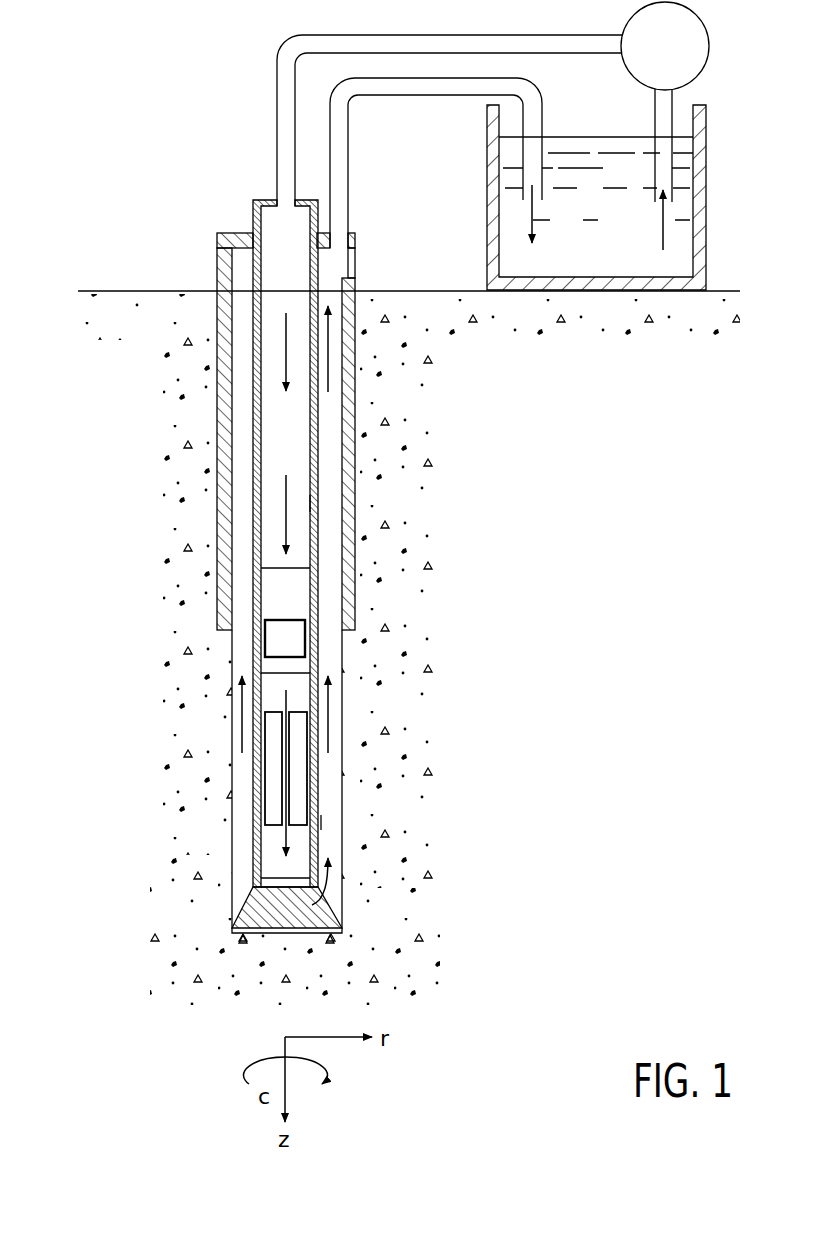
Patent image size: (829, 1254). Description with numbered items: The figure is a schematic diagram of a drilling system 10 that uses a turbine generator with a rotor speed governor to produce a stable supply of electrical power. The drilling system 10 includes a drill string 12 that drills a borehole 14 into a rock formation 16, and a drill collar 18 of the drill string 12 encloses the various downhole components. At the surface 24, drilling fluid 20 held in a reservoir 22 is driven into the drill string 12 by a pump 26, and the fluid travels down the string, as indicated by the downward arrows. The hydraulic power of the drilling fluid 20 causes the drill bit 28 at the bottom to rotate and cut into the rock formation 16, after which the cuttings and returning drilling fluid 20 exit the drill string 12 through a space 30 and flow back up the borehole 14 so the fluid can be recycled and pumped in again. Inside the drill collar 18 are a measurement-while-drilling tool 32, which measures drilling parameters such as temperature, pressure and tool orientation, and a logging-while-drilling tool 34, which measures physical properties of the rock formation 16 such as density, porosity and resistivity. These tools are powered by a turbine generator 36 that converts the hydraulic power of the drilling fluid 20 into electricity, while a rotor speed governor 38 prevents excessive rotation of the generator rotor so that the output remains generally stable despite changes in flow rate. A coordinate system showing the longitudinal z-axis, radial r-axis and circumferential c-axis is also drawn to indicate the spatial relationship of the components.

The drilling system 10 is at (113, 96).
The drill string 12 is at (249, 209).
The borehole 14 is at (375, 267).
The rock formation 16 is at (471, 453).
The drill collar 18 is at (316, 503).
The drilling fluid 20 is at (290, 418).
The reservoir 22 is at (493, 198).
The surface 24 is at (755, 238).
The pump 26 is at (688, 42).
The drill bit 28 is at (255, 918).
The space 30 is at (336, 822).
The measurement-while-drilling (MWD) tool 32 is at (302, 785).
The logging-while-drilling (LWD) tool 34 is at (270, 817).
The turbine generator 36 is at (305, 601).
The rotor speed governor 38 is at (307, 642).